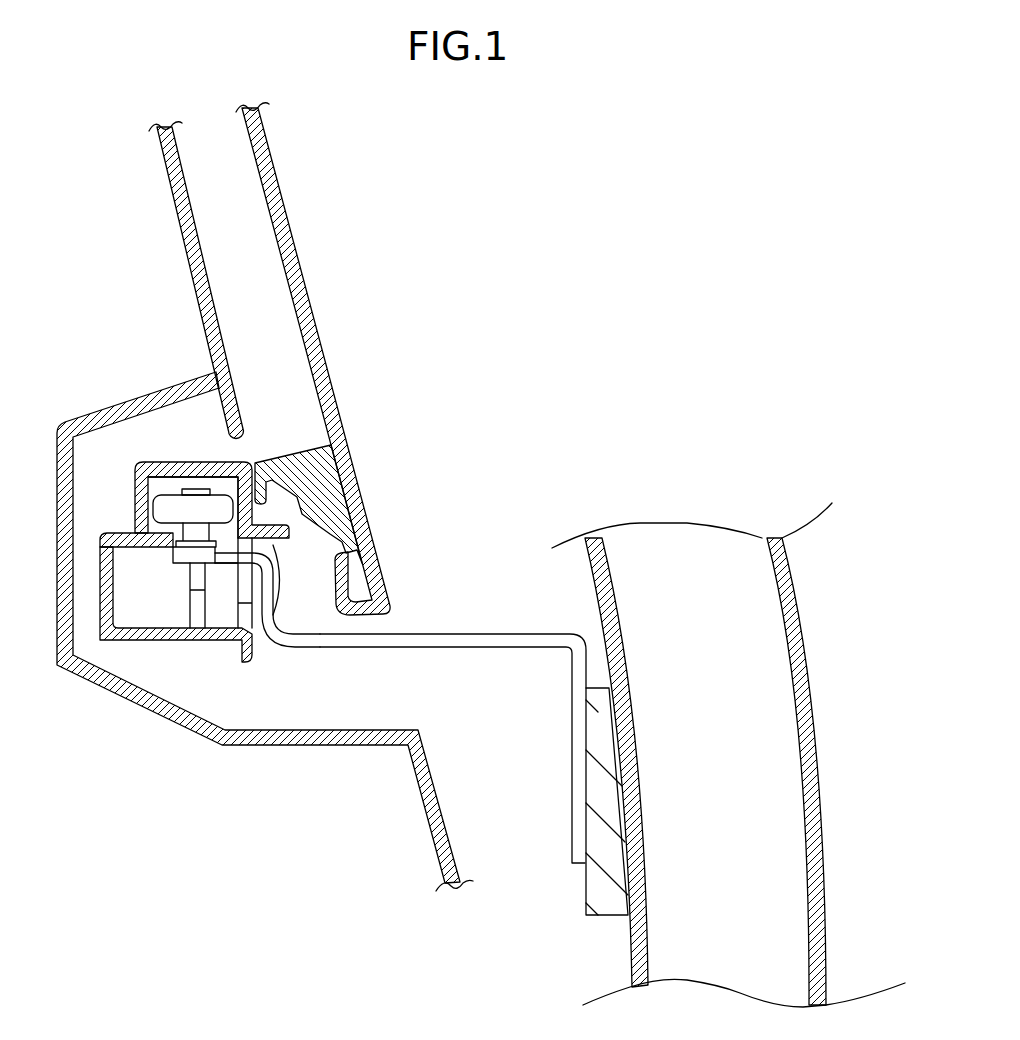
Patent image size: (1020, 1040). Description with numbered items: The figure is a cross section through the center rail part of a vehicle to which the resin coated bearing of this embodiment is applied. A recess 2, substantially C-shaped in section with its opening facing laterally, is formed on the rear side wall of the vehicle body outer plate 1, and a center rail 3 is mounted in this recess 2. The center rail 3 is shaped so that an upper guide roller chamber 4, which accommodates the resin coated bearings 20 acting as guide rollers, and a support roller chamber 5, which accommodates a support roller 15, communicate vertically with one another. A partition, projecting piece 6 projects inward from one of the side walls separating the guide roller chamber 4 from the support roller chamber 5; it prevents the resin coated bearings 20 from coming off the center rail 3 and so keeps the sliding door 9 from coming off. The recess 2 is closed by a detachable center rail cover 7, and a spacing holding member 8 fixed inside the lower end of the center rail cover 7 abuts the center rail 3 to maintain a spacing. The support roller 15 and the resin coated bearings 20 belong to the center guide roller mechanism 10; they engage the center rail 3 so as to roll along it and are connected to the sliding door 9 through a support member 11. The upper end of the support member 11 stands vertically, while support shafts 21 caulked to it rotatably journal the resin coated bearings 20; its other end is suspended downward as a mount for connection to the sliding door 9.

The vehicle body outer plate 1 is at (172, 193).
The recess 2 is at (107, 437).
The center rail 3 is at (173, 467).
The guide roller chamber 4 is at (227, 483).
The support roller chamber 5 is at (132, 620).
The partition, projecting piece 6 is at (155, 540).
The center rail cover 7 is at (275, 174).
The spacing holding member 8 is at (303, 450).
The sliding door 9 is at (780, 578).
The center guide roller mechanism 10 is at (326, 648).
The support member 11 is at (458, 633).
The support roller 15 is at (205, 590).
The resin coated bearings 20 is at (163, 508).
The support shafts 21 is at (195, 535).